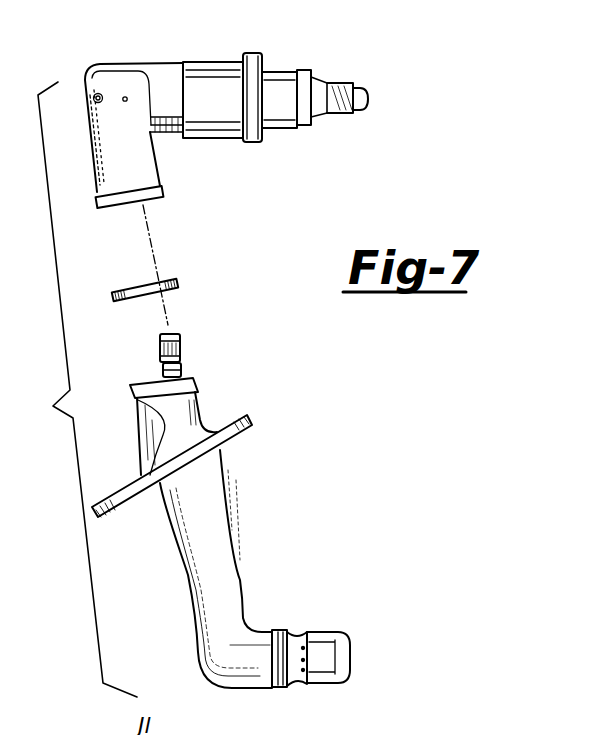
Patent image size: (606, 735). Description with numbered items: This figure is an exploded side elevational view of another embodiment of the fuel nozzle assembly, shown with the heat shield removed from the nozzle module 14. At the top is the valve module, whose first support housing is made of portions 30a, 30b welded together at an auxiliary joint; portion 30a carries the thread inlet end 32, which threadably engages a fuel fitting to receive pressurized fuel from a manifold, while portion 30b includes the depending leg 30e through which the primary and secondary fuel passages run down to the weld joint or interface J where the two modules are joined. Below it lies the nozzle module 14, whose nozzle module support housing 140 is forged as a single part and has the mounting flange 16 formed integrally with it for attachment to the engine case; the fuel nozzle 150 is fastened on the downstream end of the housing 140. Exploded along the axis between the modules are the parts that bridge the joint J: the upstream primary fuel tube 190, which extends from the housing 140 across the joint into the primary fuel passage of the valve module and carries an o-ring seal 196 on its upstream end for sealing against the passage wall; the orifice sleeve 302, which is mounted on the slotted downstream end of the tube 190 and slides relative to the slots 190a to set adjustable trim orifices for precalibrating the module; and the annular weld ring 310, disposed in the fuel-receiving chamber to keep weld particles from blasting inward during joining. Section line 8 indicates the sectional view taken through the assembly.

The section line 8- 8 is at (78, 23).
The weld joint or interface J is at (202, 92).
The support housing portion 30a is at (232, 88).
The support housing portion 30b is at (170, 112).
The depending leg 30e is at (132, 158).
The thread inlet end 32 is at (343, 88).
The weld ring 310 is at (167, 282).
The primary fuel tube 190 is at (217, 329).
The o-ring seal 196 is at (180, 345).
The orifice sleeve 302 is at (183, 372).
The slots 190a is at (197, 381).
The mounting flange 16 is at (245, 433).
The nozzle module 14 is at (262, 556).
The nozzle module support housing 140 is at (193, 567).
The fuel nozzle 150 is at (322, 616).